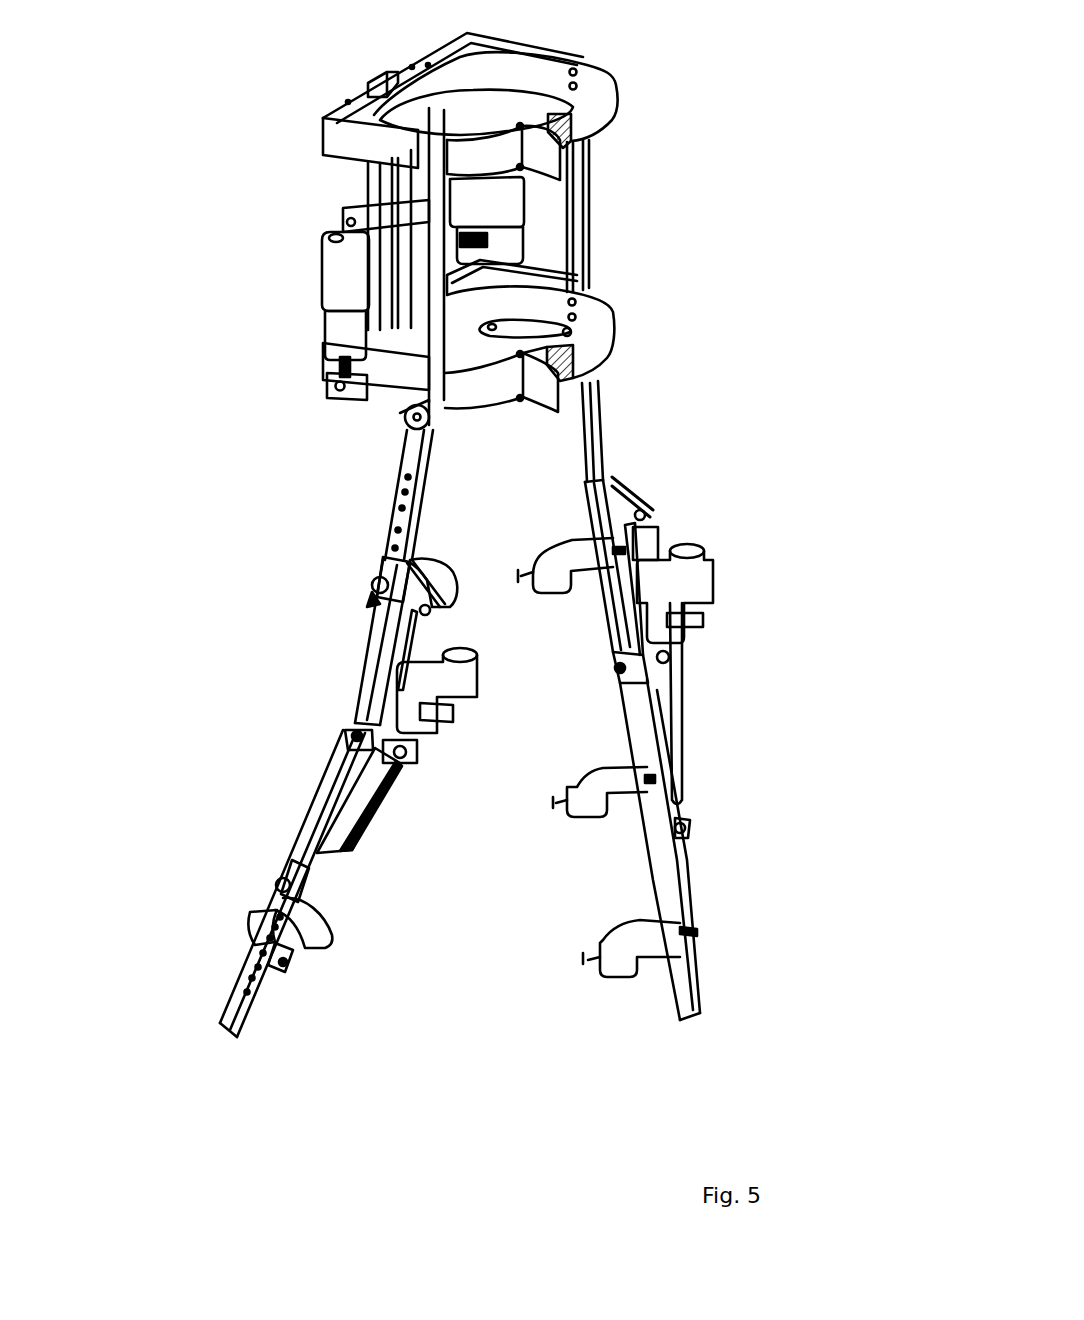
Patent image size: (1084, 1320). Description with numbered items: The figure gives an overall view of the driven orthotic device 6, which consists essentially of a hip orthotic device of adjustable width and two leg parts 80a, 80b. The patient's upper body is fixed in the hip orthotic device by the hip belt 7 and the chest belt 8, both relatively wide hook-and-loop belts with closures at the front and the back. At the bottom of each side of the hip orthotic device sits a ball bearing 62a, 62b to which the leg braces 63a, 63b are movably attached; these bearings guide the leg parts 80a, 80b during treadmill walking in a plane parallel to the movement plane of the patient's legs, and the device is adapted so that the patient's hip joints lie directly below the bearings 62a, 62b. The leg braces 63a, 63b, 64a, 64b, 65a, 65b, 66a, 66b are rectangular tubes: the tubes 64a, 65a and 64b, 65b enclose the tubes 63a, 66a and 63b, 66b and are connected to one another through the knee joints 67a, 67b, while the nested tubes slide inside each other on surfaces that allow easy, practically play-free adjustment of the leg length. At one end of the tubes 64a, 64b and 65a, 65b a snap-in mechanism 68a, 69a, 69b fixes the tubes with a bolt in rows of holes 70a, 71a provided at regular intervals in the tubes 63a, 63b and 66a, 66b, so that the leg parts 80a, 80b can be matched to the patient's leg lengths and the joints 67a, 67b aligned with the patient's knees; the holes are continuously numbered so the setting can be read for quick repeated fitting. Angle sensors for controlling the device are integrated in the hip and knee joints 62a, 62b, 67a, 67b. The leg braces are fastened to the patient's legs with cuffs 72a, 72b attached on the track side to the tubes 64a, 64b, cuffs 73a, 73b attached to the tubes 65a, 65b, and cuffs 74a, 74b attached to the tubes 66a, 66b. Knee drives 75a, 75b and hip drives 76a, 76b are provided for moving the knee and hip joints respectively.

The driven orthotic device 6 is at (226, 431).
The hip belt 7 is at (607, 333).
The chest belt 8 is at (607, 100).
The ball bearing 62a is at (404, 430).
The ball bearing 62b is at (573, 330).
The leg brace tube 63a is at (407, 465).
The leg brace tube 63b is at (590, 400).
The leg brace tube 64a is at (368, 683).
The leg brace tube 64b is at (615, 613).
The leg brace tube 65a is at (303, 832).
The leg brace tube 65b is at (637, 740).
The leg brace tube 66a is at (228, 1021).
The leg brace tube 66b is at (690, 1008).
The knee joint 67a is at (350, 734).
The knee joint 67b is at (615, 667).
The snap-in mechanism 68a is at (372, 587).
The snap-in mechanism 69a is at (276, 888).
The snap-in mechanism 69b is at (683, 830).
The row of holes 70a is at (400, 520).
The row of holes 71a is at (258, 965).
The cuff 72a is at (434, 582).
The cuff 72b is at (563, 545).
The cuff 73a is at (387, 810).
The cuff 73b is at (587, 814).
The cuff 74a is at (320, 930).
The cuff 74b is at (620, 965).
The knee drive 75a is at (464, 702).
The knee drive 75b is at (700, 585).
The hip drive 76a is at (332, 283).
The hip drive 76b is at (510, 200).
The leg part 80a is at (328, 1012).
The leg part 80b is at (628, 1027).